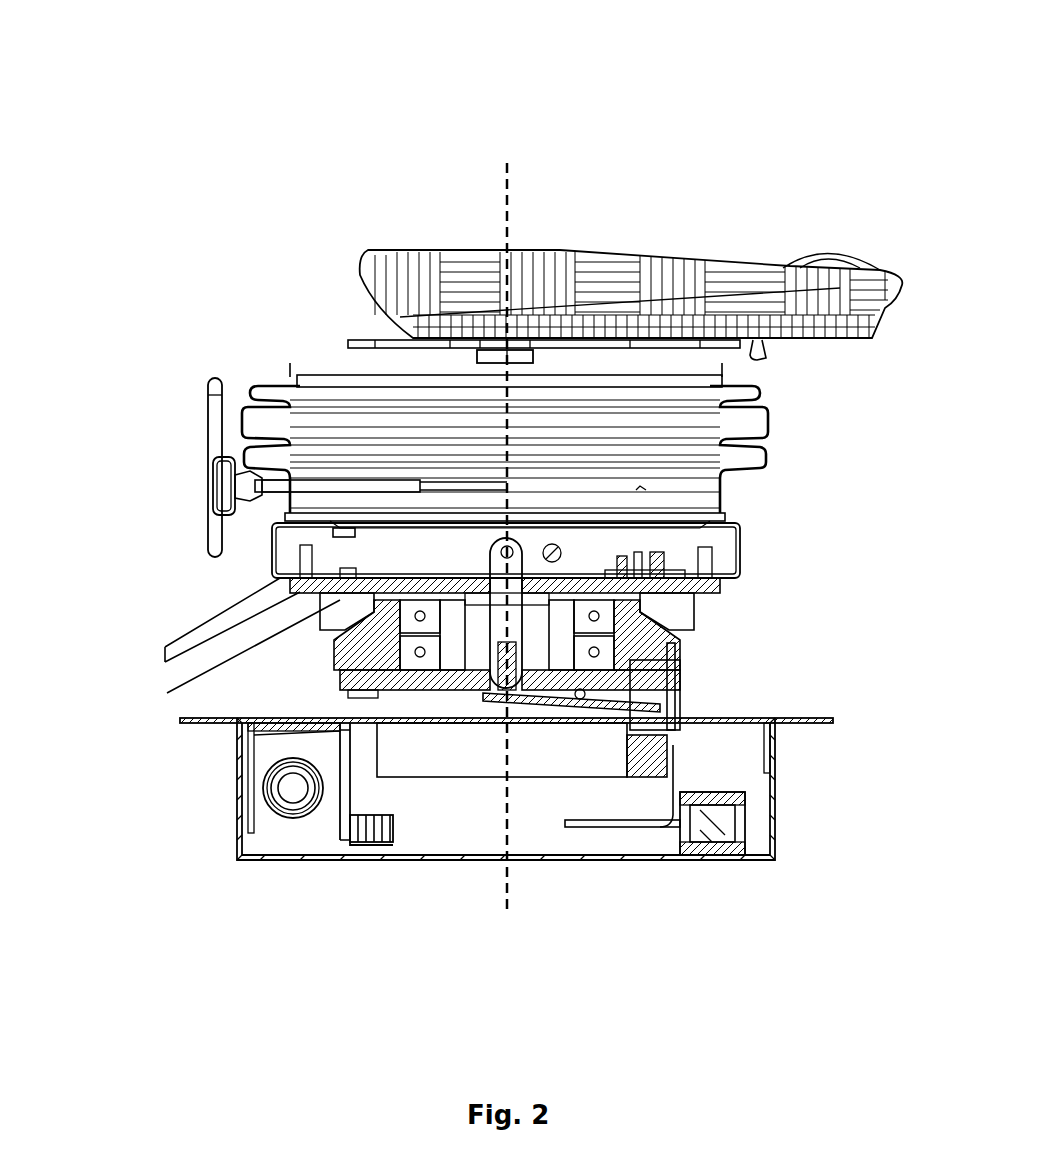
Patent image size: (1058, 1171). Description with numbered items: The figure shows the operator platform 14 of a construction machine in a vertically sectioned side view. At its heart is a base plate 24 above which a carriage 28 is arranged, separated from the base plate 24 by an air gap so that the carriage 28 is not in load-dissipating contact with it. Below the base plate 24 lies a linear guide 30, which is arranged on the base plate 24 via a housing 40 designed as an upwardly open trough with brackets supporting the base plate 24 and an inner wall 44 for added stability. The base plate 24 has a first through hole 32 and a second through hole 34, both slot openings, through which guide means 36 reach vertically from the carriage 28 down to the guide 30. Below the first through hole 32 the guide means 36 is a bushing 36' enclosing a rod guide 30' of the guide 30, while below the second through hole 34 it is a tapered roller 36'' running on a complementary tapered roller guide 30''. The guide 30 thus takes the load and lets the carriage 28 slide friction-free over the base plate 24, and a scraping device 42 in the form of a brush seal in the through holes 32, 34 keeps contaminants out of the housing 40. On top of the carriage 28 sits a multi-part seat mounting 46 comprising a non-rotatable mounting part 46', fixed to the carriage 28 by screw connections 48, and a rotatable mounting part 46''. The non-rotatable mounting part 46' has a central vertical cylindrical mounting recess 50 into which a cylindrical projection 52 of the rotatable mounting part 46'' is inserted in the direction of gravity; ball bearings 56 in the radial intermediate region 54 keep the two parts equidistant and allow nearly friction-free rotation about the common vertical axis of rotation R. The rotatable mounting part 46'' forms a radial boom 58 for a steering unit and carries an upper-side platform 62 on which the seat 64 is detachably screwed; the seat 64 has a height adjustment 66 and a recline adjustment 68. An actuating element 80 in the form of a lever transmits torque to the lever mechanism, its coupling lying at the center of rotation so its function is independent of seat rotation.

The operator platform 14 is at (266, 122).
The vertical axis of rotation R is at (527, 182).
The base plate 24 is at (628, 714).
The carriage 28 is at (613, 676).
The guide 30 is at (172, 815).
The rod guide 30' is at (190, 856).
The tapered roller guide 30'' is at (816, 831).
The first through hole 32 is at (304, 729).
The second through hole 34 is at (715, 711).
The guide means 36 is at (334, 837).
The bushing 36' is at (272, 883).
The tapered roller 36'' is at (655, 848).
The housing 40 is at (790, 867).
The scraping device 42 is at (330, 733).
The inner wall 44 is at (499, 834).
The seat mounting 46 is at (381, 514).
The non-rotatable mounting part 46' is at (770, 601).
The rotatable mounting part 46'' is at (626, 578).
The screw connections 48 is at (355, 682).
The mounting recess 50 is at (462, 607).
The cylindrical projection 52 is at (563, 611).
The radial intermediate region 54 is at (420, 632).
The ball bearings 56 is at (404, 652).
The radial boom 58 is at (175, 679).
The upper-side platform 62 is at (350, 535).
The seat 64 is at (760, 315).
The height adjustment 66 is at (242, 466).
The recline adjustment 68 is at (224, 462).
The actuating element 80 is at (206, 384).